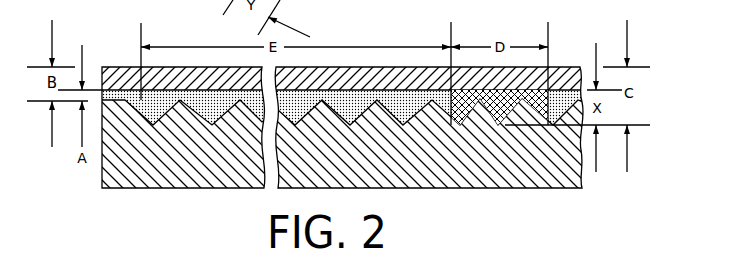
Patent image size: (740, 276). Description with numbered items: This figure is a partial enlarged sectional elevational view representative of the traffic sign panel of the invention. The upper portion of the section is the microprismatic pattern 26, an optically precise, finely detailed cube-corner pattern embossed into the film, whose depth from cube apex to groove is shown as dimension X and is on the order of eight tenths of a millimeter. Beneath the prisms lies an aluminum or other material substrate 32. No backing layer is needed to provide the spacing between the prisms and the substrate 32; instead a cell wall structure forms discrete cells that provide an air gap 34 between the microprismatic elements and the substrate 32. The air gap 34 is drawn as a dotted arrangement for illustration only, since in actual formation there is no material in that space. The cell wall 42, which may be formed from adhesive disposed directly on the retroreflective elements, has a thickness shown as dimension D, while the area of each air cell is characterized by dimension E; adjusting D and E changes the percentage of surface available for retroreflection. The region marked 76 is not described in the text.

The microprismatic pattern 26 is at (104, 168).
The substrate 32 is at (579, 67).
The air gap 34 is at (205, 110).
The cell wall 42 is at (450, 137).
The first filler material 76 is at (355, 136).